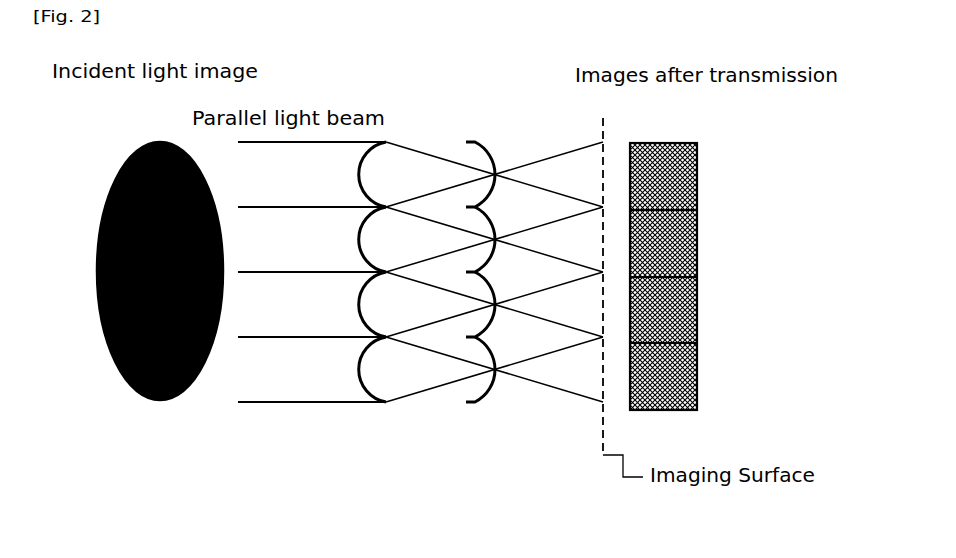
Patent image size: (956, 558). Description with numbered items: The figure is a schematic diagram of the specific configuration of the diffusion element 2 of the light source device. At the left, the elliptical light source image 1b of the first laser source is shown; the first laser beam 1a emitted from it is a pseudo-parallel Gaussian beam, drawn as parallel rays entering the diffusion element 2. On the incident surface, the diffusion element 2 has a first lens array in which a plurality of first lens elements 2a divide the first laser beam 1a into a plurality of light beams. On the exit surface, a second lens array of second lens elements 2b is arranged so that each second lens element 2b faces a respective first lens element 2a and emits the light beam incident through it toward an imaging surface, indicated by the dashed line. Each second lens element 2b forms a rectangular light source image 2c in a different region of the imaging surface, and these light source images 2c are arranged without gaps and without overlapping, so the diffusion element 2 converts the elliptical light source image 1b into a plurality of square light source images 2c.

The first laser beam 1a is at (290, 422).
The light source image 1b is at (162, 400).
The diffusion element 2 is at (437, 296).
The first lens elements 2a is at (372, 140).
The second lens elements 2b is at (480, 140).
The light source image 2c is at (697, 167).